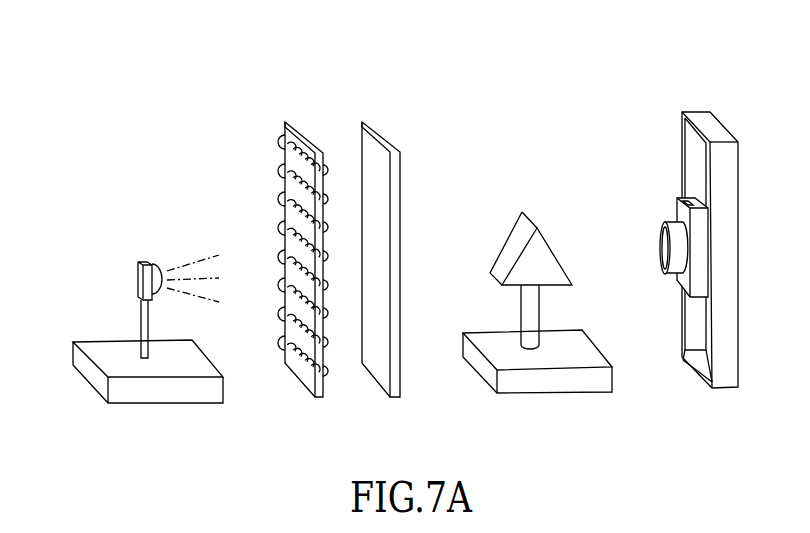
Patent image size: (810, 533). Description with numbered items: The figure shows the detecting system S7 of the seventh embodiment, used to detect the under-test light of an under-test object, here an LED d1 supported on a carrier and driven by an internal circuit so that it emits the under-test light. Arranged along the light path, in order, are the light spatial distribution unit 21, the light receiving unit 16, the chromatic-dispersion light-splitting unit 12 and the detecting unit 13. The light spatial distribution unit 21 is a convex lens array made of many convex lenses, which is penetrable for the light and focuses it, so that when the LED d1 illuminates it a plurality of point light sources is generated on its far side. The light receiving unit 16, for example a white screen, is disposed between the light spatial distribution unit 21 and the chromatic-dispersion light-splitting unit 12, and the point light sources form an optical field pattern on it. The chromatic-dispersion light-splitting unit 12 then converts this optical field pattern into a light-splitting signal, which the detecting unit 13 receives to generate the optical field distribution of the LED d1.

The detecting system S7 is at (121, 77).
The LED d1 is at (142, 281).
The light spatial distribution unit 21 is at (291, 122).
The light receiving unit 16 is at (370, 125).
The chromatic-dispersion light-splitting unit 12 is at (505, 252).
The detecting unit 13 is at (662, 245).